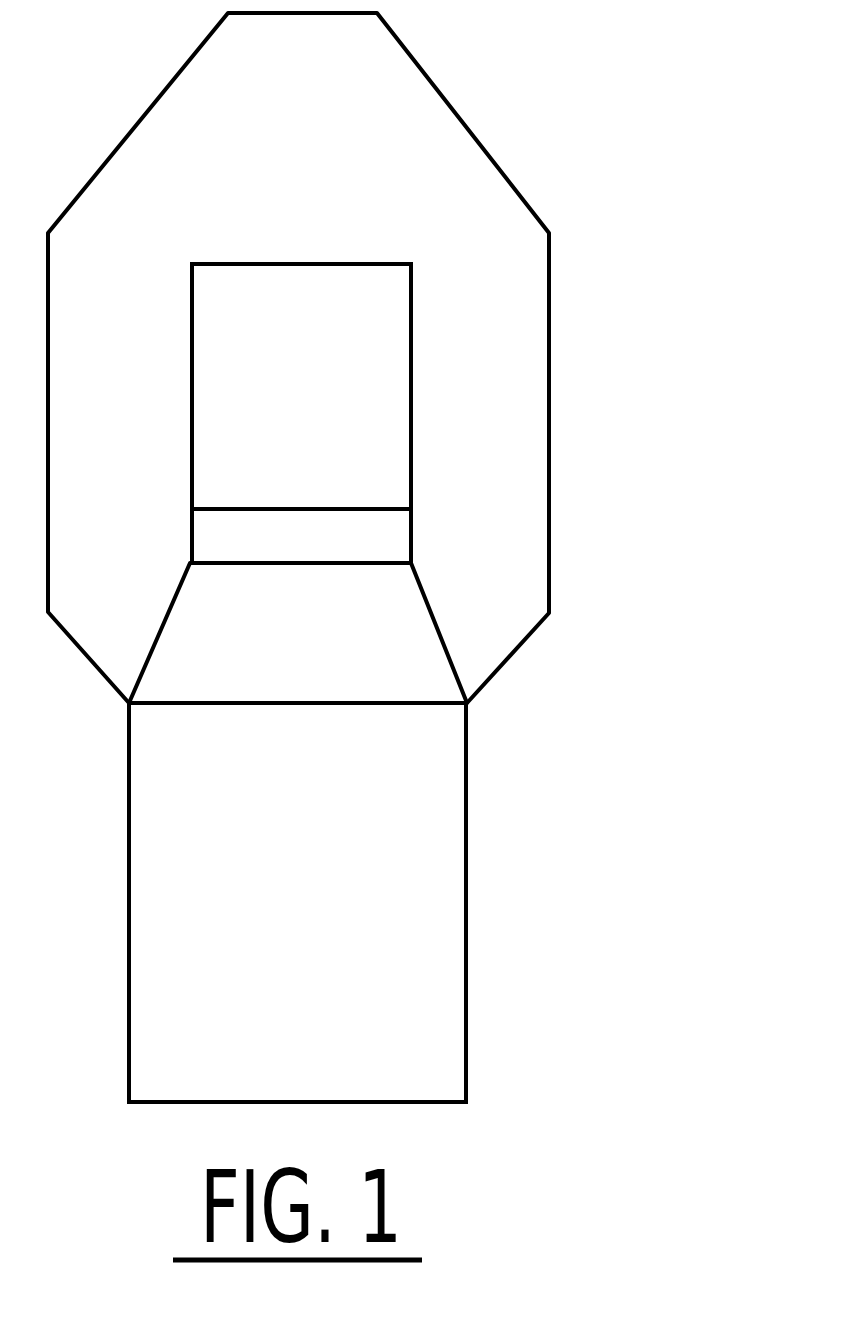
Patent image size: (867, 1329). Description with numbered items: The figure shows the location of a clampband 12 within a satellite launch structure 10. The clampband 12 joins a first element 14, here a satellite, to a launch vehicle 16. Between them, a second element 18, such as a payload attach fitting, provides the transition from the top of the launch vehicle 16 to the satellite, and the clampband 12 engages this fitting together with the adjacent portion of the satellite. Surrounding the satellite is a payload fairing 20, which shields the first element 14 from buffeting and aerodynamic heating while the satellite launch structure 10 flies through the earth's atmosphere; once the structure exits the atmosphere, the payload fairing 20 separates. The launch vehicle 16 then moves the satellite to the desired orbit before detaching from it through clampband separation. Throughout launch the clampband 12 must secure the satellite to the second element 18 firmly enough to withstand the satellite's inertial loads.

The satellite launch structure 10 is at (628, 670).
The clampband 12 is at (418, 537).
The first element 14 is at (331, 418).
The launch vehicle 16 is at (330, 930).
The second element 18 is at (331, 662).
The payload fairing 20 is at (478, 133).